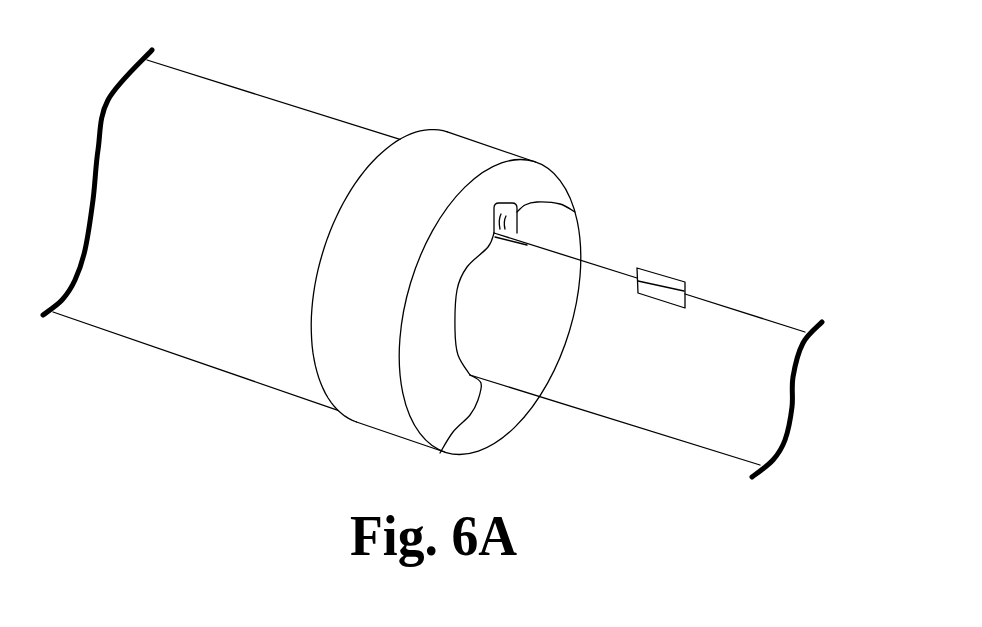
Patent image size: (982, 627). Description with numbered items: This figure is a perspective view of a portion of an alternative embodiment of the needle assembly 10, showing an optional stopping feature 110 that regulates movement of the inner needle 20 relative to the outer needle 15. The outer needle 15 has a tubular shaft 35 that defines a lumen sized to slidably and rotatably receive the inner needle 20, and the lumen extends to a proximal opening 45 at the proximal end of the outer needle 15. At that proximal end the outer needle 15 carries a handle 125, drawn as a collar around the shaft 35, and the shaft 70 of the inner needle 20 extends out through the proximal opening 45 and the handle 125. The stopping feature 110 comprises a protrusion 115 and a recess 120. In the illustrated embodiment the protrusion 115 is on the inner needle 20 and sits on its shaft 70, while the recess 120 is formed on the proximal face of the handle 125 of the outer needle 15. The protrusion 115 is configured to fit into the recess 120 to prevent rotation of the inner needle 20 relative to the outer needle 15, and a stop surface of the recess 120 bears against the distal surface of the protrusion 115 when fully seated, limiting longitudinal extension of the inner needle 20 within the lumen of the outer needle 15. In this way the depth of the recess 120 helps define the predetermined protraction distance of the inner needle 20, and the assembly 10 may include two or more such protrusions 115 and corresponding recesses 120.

The needle assembly 10 is at (134, 360).
The outer needle 15 is at (282, 89).
The inner needle 20 is at (747, 291).
The shaft 35 is at (241, 372).
The proximal opening 45 is at (442, 453).
The shaft 70 is at (765, 380).
The stopping feature 110 is at (587, 446).
The protrusion 115 is at (680, 277).
The recess 120 is at (574, 212).
The handle 125 is at (545, 164).